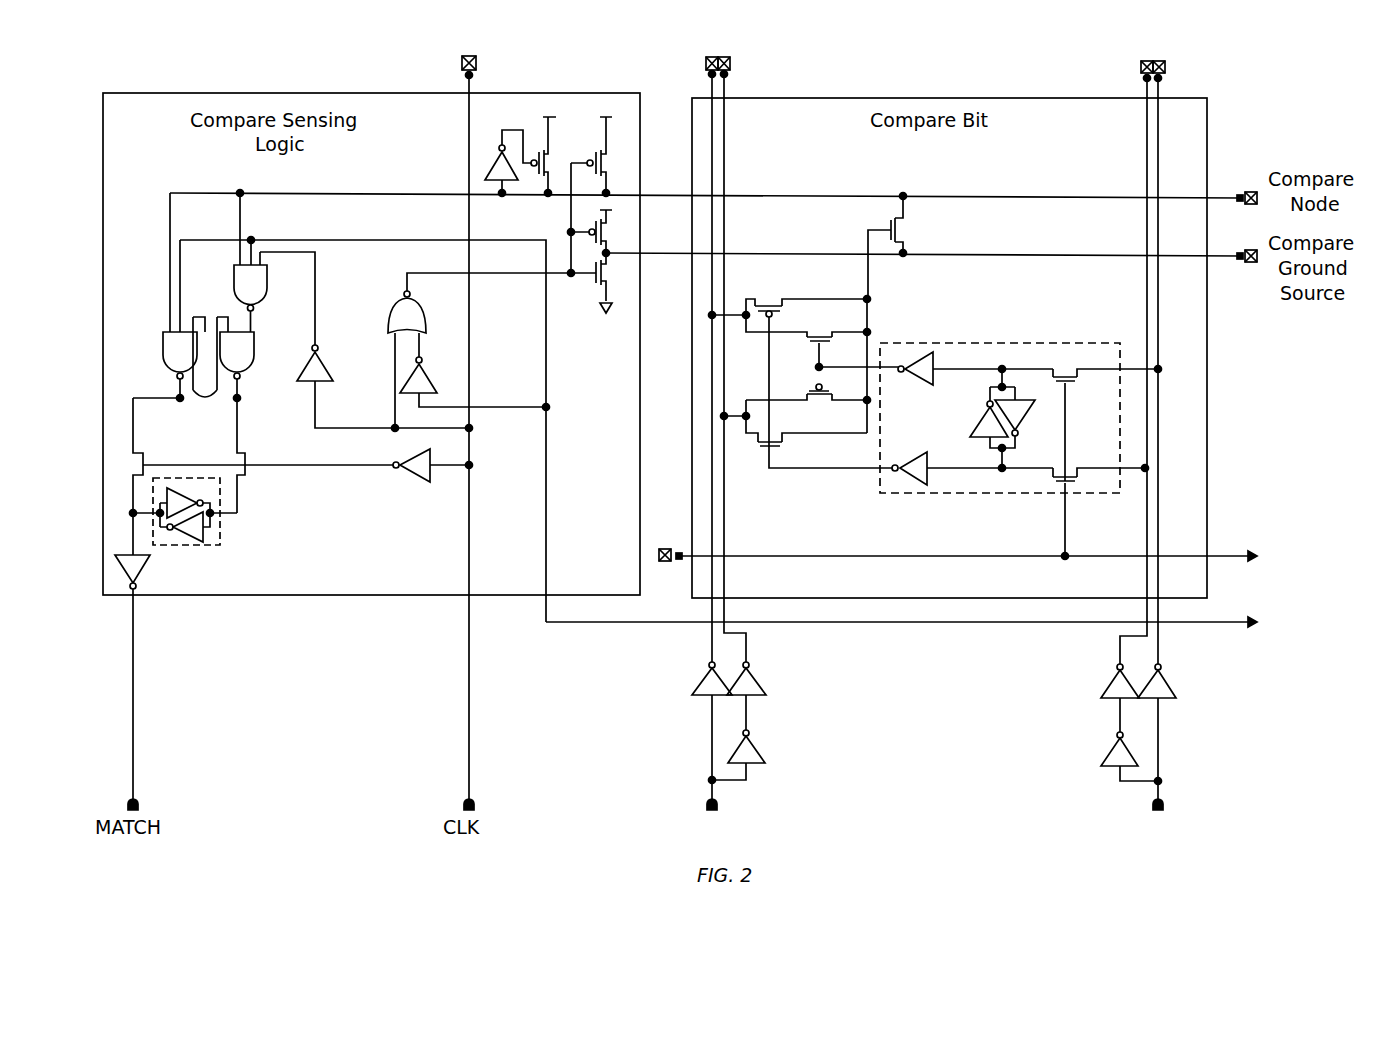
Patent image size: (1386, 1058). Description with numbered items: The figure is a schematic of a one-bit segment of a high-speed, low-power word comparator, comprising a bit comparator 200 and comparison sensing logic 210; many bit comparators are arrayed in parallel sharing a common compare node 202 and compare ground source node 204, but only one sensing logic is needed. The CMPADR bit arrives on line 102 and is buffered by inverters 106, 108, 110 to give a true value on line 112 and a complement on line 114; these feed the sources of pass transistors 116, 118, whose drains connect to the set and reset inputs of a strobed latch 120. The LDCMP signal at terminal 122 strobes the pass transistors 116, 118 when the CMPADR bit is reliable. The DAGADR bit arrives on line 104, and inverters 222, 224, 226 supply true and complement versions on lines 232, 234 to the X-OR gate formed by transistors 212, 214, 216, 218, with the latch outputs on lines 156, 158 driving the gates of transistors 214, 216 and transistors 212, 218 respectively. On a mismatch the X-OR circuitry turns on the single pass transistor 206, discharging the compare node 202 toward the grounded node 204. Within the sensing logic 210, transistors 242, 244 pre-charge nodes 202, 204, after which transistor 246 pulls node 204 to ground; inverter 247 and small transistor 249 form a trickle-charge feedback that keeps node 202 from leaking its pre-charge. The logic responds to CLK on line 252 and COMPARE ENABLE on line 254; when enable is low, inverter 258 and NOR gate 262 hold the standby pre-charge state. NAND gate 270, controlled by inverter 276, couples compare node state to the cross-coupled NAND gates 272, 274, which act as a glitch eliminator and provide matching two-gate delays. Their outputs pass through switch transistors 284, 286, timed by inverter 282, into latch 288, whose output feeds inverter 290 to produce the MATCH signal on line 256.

The bit comparator 200 is at (1213, 96).
The comparison sensing logic 210 is at (272, 599).
The NAND gate 270 is at (237, 263).
The NAND gate 272 is at (165, 340).
The NAND gate 274 is at (253, 340).
The inverter 276 is at (308, 384).
The NOR gate 262 is at (401, 295).
The inverter 258 is at (434, 385).
The inverter 282 is at (410, 481).
The pass transistor 284 is at (140, 458).
The pass transistor 286 is at (250, 470).
The latch 288 is at (222, 528).
The inverter 290 is at (140, 570).
The line 256 is at (134, 695).
The line 252 is at (470, 698).
The inverter 247 is at (492, 162).
The pass transistor 249 is at (542, 150).
The transistor 242 is at (593, 150).
The transistor 244 is at (608, 240).
The transistor 246 is at (610, 290).
The compare node 202 is at (905, 195).
The compare ground source node 204 is at (905, 256).
The pass transistor 206 is at (897, 240).
The transistor 212 is at (773, 300).
The transistor 214 is at (826, 335).
The transistor 216 is at (804, 398).
The transistor 218 is at (784, 445).
The line 156 is at (892, 372).
The line 158 is at (822, 470).
The pass transistor 118 is at (1065, 378).
The pass transistor 116 is at (1069, 485).
The strobed latch 120 is at (996, 496).
The terminal 122 is at (1165, 554).
The line 254 is at (1190, 622).
The line 232 is at (750, 643).
The line 234 is at (707, 645).
The inverter 226 is at (695, 685).
The inverter 222 is at (762, 685).
The inverter 224 is at (758, 745).
The line 104 is at (708, 791).
The line 112 is at (1117, 655).
The line 114 is at (1160, 655).
The inverter 110 is at (1105, 690).
The inverter 106 is at (1178, 690).
The inverter 108 is at (1105, 750).
The line 102 is at (1160, 797).